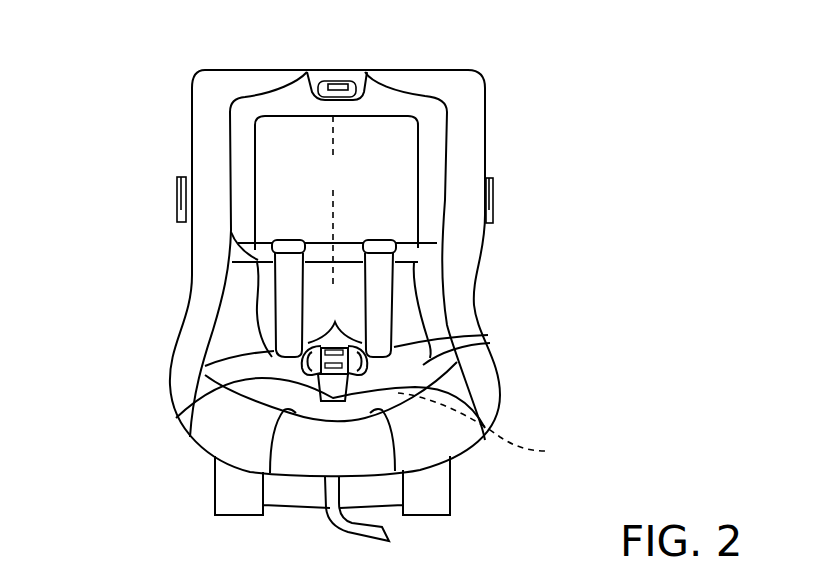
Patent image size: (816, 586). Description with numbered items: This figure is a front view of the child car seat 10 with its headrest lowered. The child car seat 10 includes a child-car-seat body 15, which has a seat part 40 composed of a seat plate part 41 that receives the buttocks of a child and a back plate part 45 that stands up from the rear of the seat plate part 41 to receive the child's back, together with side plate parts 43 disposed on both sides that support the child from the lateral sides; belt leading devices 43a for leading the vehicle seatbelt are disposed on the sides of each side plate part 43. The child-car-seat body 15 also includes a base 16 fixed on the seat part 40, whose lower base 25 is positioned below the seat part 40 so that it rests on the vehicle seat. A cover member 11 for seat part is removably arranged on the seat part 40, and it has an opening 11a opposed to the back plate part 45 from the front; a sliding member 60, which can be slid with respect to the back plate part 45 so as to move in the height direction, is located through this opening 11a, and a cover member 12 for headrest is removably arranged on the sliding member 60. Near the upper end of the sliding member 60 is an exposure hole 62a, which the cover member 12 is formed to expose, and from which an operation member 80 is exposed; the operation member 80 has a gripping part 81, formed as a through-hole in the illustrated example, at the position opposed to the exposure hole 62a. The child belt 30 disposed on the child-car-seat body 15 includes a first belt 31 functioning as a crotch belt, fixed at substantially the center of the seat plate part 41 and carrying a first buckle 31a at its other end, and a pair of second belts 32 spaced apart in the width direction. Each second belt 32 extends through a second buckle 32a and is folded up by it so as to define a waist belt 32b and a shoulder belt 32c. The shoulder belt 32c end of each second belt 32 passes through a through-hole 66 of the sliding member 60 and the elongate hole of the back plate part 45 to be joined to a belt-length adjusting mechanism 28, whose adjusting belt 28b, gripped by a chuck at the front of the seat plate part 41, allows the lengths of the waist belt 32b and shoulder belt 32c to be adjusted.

The child car seat 10 is at (533, 73).
The cover member for seat part 11 is at (207, 253).
The opening 11a is at (425, 257).
The cover member for headrest 12 is at (383, 90).
The child-car-seat body 15 is at (75, 380).
The base 16 is at (269, 485).
The lower base 25 is at (222, 491).
The belt-length adjusting mechanism 28 is at (434, 515).
The adjusting belt 28b is at (392, 530).
The child belt 30 is at (272, 352).
The first belt 31 is at (372, 408).
The first buckle 31a is at (358, 375).
The second belt 32 is at (338, 314).
The second buckle 32a is at (335, 320).
The waist belt 32b is at (235, 400).
The shoulder belt 32c is at (288, 250).
The seat part 40 is at (158, 338).
The seat plate part 41 is at (488, 429).
The side plate part 43 is at (470, 150).
The belt leading device 43a is at (177, 198).
The back plate part 45 is at (328, 201).
The sliding member 60 is at (339, 85).
The exposure hole 62a is at (328, 98).
The through-hole 66 is at (278, 242).
The operation member 80 is at (358, 85).
The gripping part 81 is at (343, 100).